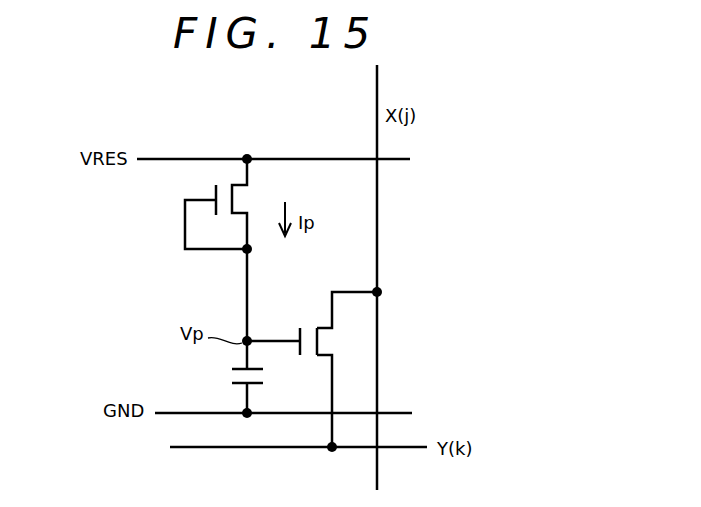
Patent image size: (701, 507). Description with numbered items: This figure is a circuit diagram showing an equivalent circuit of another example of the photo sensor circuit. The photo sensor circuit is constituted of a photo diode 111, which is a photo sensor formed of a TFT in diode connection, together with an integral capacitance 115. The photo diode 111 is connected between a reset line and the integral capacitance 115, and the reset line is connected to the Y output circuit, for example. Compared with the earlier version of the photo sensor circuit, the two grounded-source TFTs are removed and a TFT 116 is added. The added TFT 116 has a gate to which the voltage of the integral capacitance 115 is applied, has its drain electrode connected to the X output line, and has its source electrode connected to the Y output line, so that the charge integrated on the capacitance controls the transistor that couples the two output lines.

The photo diode 111 is at (247, 201).
The integral capacitance 115 is at (270, 379).
The TFT 116 is at (323, 337).